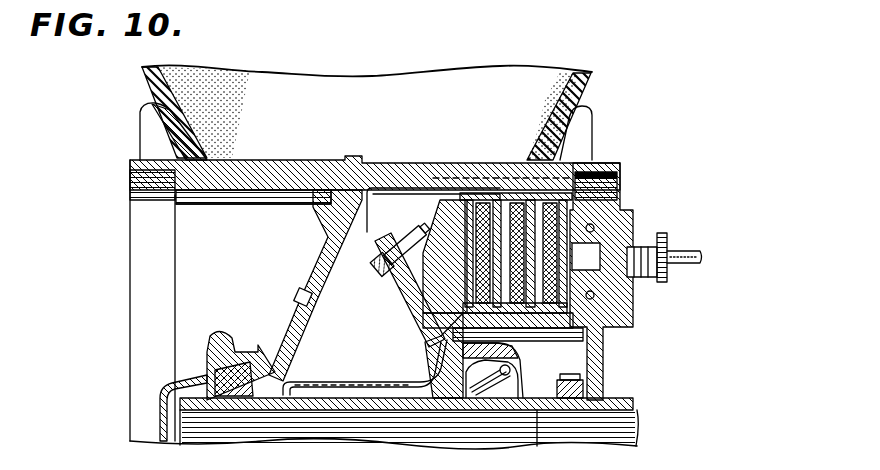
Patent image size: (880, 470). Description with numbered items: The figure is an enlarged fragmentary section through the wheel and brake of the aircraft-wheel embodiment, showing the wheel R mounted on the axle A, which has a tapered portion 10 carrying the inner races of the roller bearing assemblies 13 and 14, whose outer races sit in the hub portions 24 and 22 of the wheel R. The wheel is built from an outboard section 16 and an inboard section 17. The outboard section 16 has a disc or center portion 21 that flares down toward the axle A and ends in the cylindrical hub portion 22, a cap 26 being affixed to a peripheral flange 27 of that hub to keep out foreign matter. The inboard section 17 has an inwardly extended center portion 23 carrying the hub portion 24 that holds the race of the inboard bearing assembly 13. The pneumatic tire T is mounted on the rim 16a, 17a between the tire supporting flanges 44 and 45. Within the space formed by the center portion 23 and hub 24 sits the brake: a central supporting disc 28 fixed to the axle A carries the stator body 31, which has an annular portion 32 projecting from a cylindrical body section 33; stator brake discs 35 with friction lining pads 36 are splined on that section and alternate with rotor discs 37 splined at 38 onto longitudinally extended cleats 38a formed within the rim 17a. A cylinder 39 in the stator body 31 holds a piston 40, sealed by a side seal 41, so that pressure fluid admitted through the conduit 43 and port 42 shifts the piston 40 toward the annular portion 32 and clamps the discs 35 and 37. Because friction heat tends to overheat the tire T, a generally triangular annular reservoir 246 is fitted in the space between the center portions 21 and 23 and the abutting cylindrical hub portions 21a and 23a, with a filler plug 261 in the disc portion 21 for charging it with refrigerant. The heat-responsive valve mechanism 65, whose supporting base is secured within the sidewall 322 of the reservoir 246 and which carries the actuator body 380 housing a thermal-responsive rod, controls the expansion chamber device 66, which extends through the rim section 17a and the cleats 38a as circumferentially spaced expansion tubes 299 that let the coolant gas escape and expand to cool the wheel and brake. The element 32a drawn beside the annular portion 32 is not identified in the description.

The tapered portion 10 is at (366, 7).
The pneumatic tire T is at (150, 80).
The tire supporting flange 45 is at (148, 106).
The outboard section 16 is at (292, 158).
The wheel rim 16a is at (249, 118).
The inboard section 17 is at (388, 156).
The rim 17a is at (432, 176).
The tire supporting flange 44 is at (592, 127).
The wheel R is at (624, 156).
The side seal 41 is at (618, 222).
The rotor discs 37 is at (618, 180).
The cylinder 39 is at (630, 240).
The port 42 is at (668, 270).
The conduit 43 is at (700, 252).
The piston 40 is at (640, 283).
The friction lining pads 36 is at (627, 327).
The brake stator body 31 is at (640, 338).
The splined connections 38 is at (467, 222).
The cleats 38a is at (507, 190).
The expansion tubes 299 is at (523, 190).
The support block 32a is at (440, 256).
The expansion chamber 66 is at (427, 168).
The actuator body 380 is at (430, 233).
The center portion 21 is at (322, 276).
The filler plug 261 is at (297, 293).
The reservoir 246 is at (296, 316).
The heat-responsive valve mechanism 65 is at (356, 256).
The annular portion 32 is at (420, 300).
The stator brake discs 35 is at (388, 276).
The center portion 23 is at (420, 323).
The sidewall 322 is at (413, 347).
The hub portion 24 is at (446, 366).
The roller bearing assembly 13 is at (520, 373).
The cylindrical hub portion 22 is at (240, 372).
The peripheral flange 27 is at (214, 337).
The roller bearing assembly 14 is at (208, 375).
The cap 26 is at (159, 410).
The central supporting disc 28 is at (600, 378).
The cylindrical body section 33 is at (553, 333).
The axle A is at (633, 400).
The cylindrical hub portion 21a is at (350, 396).
The cylindrical hub portion 23a is at (390, 398).